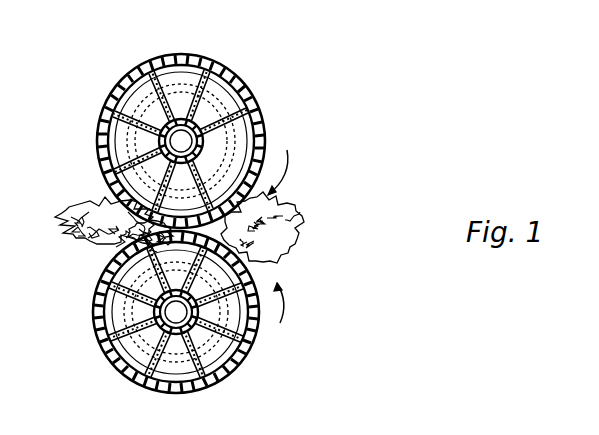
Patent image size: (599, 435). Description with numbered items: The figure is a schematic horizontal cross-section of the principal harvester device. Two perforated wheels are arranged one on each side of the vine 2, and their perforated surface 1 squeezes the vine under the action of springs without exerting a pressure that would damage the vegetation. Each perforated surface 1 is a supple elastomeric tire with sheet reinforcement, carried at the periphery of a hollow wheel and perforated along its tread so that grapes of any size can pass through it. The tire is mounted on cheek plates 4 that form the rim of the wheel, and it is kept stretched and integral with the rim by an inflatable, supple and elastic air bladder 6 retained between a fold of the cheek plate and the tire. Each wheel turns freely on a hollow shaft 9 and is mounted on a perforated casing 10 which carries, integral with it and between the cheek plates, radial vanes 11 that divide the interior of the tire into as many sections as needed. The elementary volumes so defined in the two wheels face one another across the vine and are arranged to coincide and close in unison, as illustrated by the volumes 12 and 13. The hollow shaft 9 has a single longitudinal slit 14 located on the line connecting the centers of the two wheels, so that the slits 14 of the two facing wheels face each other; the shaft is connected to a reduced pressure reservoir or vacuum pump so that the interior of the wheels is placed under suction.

The perforated surface 1 is at (262, 113).
The vine 2 is at (300, 229).
The cheek plate 4 is at (256, 92).
The air bladder 6 is at (128, 104).
The hollow shaft 9 is at (175, 138).
The perforated casing 10 is at (192, 119).
The radial vanes 11 is at (263, 152).
The volume 12 is at (177, 177).
The volume 13 is at (170, 253).
The slit 14 is at (172, 147).